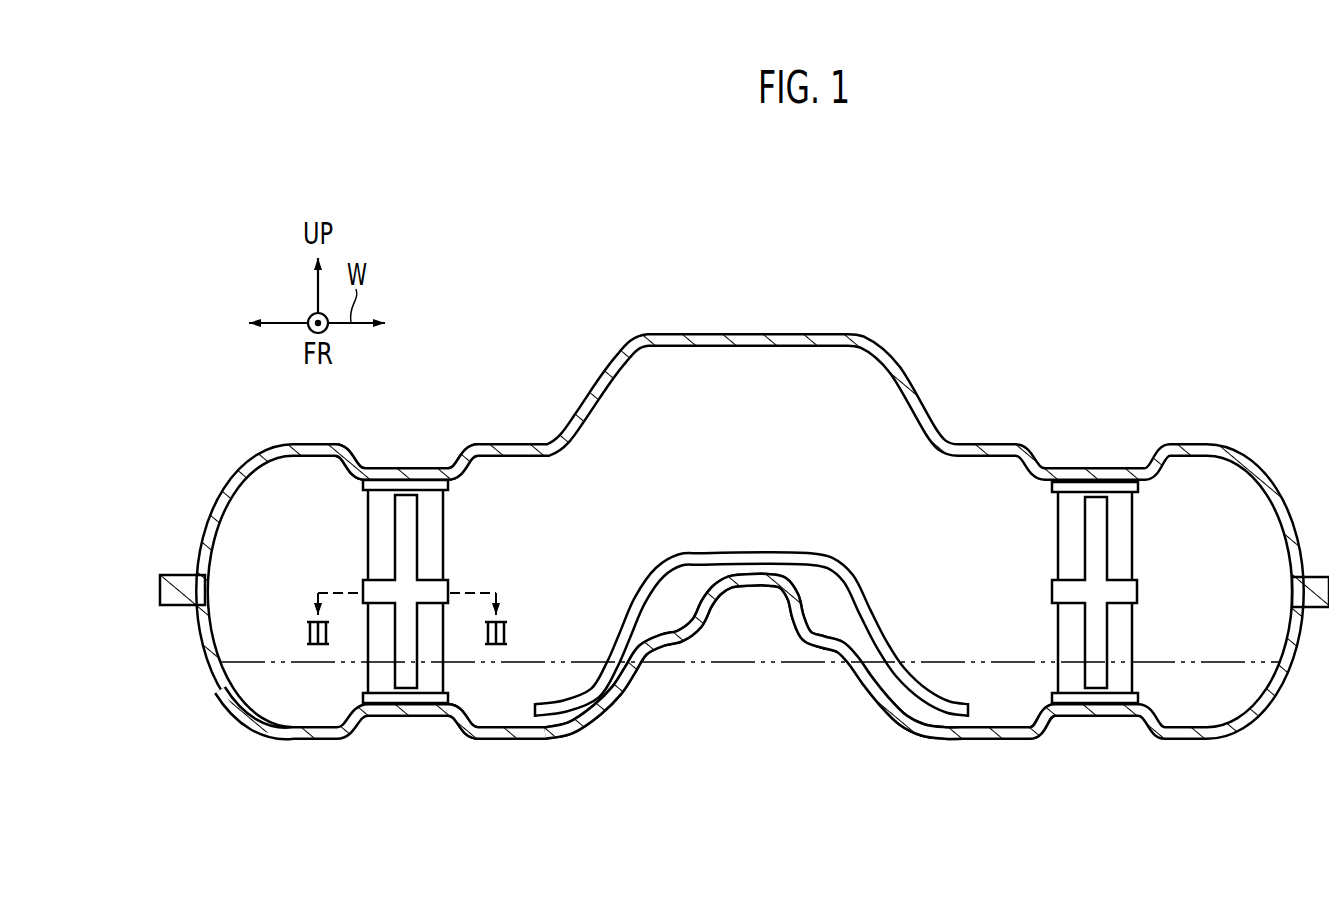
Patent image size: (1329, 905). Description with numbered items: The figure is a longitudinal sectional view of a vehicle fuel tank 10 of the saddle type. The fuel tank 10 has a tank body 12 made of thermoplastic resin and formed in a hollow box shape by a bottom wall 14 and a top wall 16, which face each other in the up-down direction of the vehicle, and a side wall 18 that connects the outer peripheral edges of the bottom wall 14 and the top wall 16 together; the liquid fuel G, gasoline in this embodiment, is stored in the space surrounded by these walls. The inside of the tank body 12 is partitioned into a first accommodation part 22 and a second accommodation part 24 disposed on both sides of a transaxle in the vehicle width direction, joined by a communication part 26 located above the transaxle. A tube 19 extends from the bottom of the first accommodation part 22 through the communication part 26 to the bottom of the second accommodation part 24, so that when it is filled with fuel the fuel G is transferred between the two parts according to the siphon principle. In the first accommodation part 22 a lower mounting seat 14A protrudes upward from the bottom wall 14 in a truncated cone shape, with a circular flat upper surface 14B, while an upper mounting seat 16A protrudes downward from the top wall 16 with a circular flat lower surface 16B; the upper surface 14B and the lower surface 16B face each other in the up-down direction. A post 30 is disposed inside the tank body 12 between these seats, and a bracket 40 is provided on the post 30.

The fuel tank 10 is at (1122, 349).
The tank body 12 is at (912, 372).
The bottom wall 14 is at (496, 744).
The lower mounting seat 14A is at (458, 713).
The upper surface 14B is at (388, 698).
The top wall 16 is at (500, 441).
The upper mounting seat 16A is at (358, 466).
The lower surface 16B is at (388, 483).
The side wall 18 is at (207, 520).
The tube 19 is at (750, 552).
The first accommodation part 22 is at (312, 722).
The second accommodation part 24 is at (997, 712).
The communication part 26 is at (761, 578).
The post 30 is at (447, 529).
The bracket 40 is at (422, 562).
The fuel G is at (560, 660).